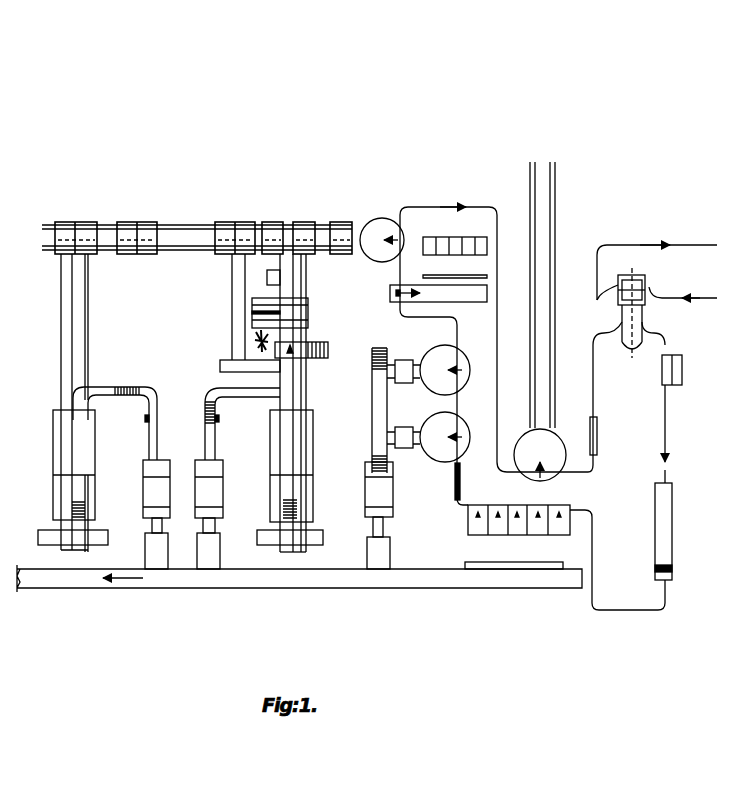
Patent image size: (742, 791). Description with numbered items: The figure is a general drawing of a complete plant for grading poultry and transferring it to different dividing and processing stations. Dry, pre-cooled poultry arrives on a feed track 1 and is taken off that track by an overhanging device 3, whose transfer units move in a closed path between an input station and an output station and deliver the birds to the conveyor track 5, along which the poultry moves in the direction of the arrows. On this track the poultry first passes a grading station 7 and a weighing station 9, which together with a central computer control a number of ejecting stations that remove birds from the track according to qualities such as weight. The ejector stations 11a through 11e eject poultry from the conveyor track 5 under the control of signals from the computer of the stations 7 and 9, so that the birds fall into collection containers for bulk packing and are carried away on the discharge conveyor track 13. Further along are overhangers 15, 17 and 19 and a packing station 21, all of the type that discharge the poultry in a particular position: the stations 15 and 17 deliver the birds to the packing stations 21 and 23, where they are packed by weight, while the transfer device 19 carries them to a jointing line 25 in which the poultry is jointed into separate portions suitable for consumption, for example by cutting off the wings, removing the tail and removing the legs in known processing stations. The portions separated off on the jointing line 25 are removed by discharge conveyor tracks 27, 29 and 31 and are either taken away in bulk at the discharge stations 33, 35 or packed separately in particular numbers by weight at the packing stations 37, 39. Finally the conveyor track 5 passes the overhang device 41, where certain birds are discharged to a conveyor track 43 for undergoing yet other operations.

The feed track 1 is at (694, 243).
The overhanging device 3 is at (646, 318).
The conveyor track 5 is at (668, 430).
The grading station 7 is at (685, 370).
The weighing station 9 is at (673, 520).
The ejector station 11a is at (480, 526).
The ejector station 11e is at (562, 523).
The discharge conveyor track 13 is at (398, 580).
The overhanger 15 is at (462, 450).
The overhanger 17 is at (460, 380).
The transfer device 19 is at (380, 262).
The packing station 21 is at (402, 440).
The packing station 23 is at (402, 360).
The jointing line 25 is at (229, 222).
The discharge conveyor track 27 is at (306, 280).
The discharge conveyor track 29 is at (233, 289).
The discharge conveyor track 31 is at (78, 314).
The discharge station 33 is at (312, 528).
The discharge station 35 is at (58, 525).
The packing station 37 is at (215, 490).
The packing station 39 is at (150, 489).
The overhang device 41 is at (553, 448).
The conveyor track 43 is at (542, 338).